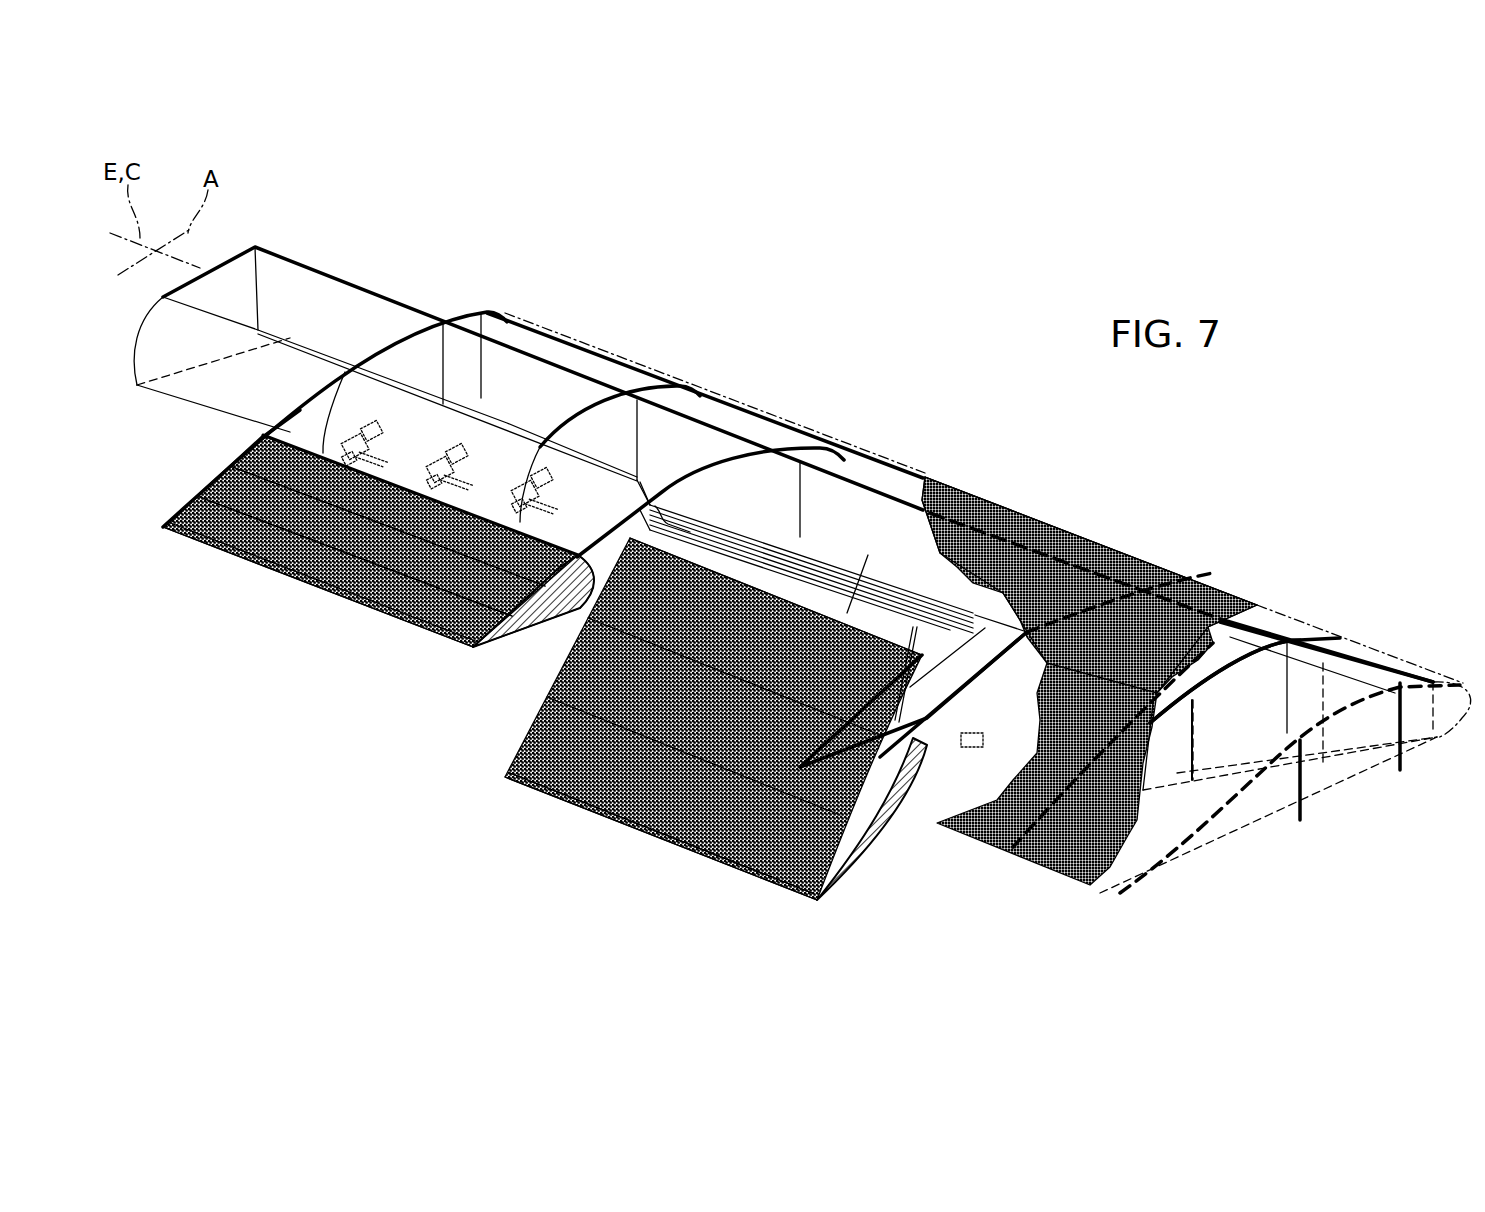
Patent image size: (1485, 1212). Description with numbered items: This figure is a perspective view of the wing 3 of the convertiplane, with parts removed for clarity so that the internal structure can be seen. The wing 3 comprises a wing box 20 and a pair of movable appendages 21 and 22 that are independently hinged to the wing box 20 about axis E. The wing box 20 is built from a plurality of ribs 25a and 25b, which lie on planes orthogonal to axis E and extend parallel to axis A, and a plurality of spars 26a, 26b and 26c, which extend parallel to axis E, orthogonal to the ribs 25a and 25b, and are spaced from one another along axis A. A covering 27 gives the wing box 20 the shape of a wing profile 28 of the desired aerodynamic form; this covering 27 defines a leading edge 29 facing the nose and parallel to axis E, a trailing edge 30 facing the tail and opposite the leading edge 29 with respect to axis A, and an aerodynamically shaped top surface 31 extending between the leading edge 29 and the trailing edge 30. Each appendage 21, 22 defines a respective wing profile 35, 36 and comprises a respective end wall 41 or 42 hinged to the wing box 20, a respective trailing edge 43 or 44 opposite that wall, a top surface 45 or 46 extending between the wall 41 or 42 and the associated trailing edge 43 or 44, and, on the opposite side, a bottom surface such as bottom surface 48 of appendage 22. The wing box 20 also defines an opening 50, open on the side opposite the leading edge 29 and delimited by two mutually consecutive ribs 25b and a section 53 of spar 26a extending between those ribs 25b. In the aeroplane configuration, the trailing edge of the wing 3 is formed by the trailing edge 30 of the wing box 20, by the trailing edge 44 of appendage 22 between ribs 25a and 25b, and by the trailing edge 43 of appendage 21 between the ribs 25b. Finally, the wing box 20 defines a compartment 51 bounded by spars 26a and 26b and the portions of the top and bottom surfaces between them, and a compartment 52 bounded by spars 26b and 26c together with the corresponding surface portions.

The wing 3 is at (728, 360).
The wing box 20 is at (302, 253).
The movable appendage 21 is at (672, 787).
The movable appendage 22 is at (317, 560).
The ribs 25a is at (293, 413).
The ribs 25b is at (507, 630).
The spar 26a is at (1258, 803).
The spar 26b is at (1367, 741).
The spar 26c is at (1422, 710).
The covering 27 is at (1085, 608).
The wing profile 28 is at (452, 305).
The leading edge 29 is at (1210, 575).
The trailing edge 30 is at (987, 856).
The top surface 31 is at (1035, 578).
The wing profile 35 is at (742, 888).
The wing profile 36 is at (336, 616).
The end wall 41 is at (802, 597).
The end wall 42 is at (510, 426).
The trailing edge 43 is at (567, 812).
The trailing edge 44 is at (283, 580).
The top surface 45 is at (752, 612).
The top surface 46 is at (410, 582).
The bottom surface 48 is at (535, 625).
The opening 50 is at (636, 531).
The compartment 51 is at (1318, 750).
The compartment 52 is at (1397, 676).
The section of spar 53 is at (731, 551).